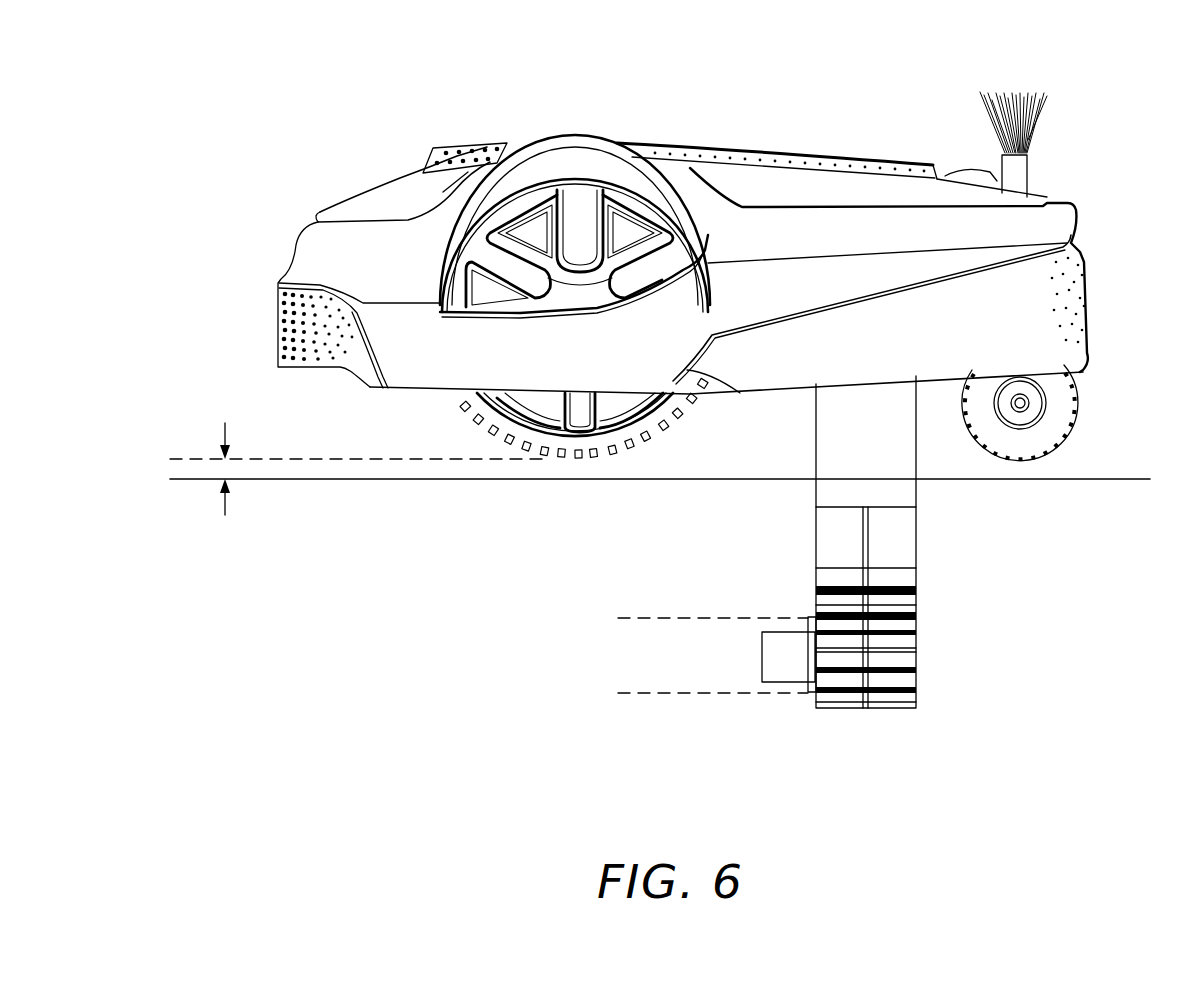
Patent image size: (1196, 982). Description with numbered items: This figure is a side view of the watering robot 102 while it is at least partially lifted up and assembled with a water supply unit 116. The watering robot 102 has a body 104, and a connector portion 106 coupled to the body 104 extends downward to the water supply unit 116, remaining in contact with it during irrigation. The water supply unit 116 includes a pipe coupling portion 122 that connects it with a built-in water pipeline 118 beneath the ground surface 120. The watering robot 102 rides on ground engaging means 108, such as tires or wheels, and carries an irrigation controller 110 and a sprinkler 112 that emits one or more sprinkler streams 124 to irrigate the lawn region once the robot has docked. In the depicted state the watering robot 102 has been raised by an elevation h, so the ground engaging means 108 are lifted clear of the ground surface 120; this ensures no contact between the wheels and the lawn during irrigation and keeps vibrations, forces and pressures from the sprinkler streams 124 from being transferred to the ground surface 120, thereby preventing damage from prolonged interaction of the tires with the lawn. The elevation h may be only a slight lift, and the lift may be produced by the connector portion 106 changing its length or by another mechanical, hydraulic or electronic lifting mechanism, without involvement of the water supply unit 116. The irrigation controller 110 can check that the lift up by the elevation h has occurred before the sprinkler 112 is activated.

The watering robot 102 is at (351, 80).
The body 104 is at (797, 178).
The connector portion 106 is at (915, 447).
The ground engaging means 108 is at (577, 297).
The irrigation controller 110 is at (736, 133).
The sprinkler 112 is at (1028, 170).
The water supply unit 116 is at (783, 557).
The water pipeline 118 is at (667, 694).
The ground surface 120 is at (1133, 479).
The pipe coupling portion 122 is at (783, 665).
The sprinkler stream 124 is at (1043, 105).
The elevation h is at (225, 508).